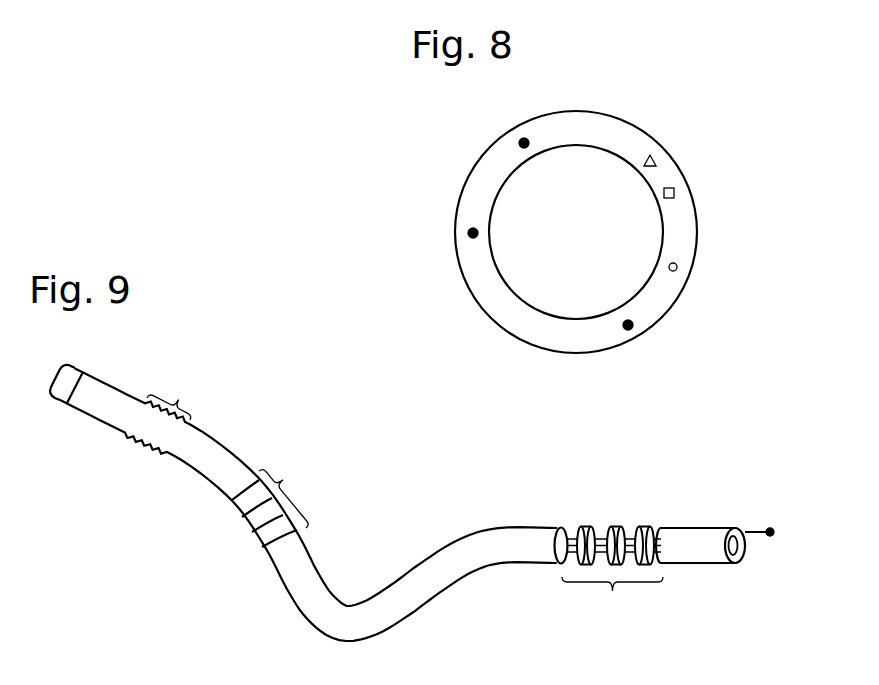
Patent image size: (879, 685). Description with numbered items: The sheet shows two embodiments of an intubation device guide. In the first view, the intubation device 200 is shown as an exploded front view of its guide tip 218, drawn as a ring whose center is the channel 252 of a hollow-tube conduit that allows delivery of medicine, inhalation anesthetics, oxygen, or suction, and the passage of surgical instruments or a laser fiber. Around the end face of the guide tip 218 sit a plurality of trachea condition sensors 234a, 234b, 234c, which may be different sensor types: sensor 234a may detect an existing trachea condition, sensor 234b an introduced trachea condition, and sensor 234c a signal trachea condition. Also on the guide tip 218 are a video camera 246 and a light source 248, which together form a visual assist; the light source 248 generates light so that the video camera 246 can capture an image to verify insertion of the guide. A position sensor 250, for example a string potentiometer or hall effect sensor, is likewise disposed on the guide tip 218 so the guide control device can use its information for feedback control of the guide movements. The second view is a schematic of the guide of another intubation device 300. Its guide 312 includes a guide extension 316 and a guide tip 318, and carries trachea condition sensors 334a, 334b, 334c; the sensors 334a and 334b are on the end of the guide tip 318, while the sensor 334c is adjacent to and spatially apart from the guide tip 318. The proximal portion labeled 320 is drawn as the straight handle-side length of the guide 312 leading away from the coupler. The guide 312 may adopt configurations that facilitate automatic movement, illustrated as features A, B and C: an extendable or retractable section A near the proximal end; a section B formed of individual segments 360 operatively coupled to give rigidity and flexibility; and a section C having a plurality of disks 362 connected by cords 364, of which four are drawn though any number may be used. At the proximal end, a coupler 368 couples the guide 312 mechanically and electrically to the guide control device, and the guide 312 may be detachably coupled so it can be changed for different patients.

In FIG. 8, the intubation device 200 is at (648, 67).
In FIG. 8, the guide tip 218 is at (664, 142).
In FIG. 8, the channel 252 is at (557, 244).
In FIG. 8, the trachea condition sensor 234a is at (468, 234).
In FIG. 8, the trachea condition sensor 234b is at (627, 330).
In FIG. 8, the trachea condition sensor 234c is at (520, 143).
In FIG. 8, the video camera 246 is at (676, 195).
In FIG. 8, the light source 248 is at (657, 160).
In FIG. 8, the position sensor 250 is at (678, 267).
In FIG. 9, the intubation device 300 is at (347, 490).
In FIG. 9, the guide 312 is at (400, 535).
In FIG. 9, the guide extension 316 is at (218, 449).
In FIG. 9, the guide tip 318 is at (687, 533).
In FIG. 9, the handle 320 is at (108, 392).
In FIG. 9, the trachea condition sensor 334a is at (737, 560).
In FIG. 9, the trachea condition sensor 334b is at (729, 530).
In FIG. 9, the trachea condition sensor 334c is at (771, 536).
In FIG. 9, the individual segments 360 is at (245, 502).
In FIG. 9, the disks 362 is at (585, 530).
In FIG. 9, the cords 364 is at (600, 531).
In FIG. 9, the coupler 368 is at (77, 374).
In FIG. 9, the extendable or retractable section A is at (169, 391).
In FIG. 9, the section having individual segments B is at (292, 499).
In FIG. 9, the section having disks connected by cords C is at (606, 553).